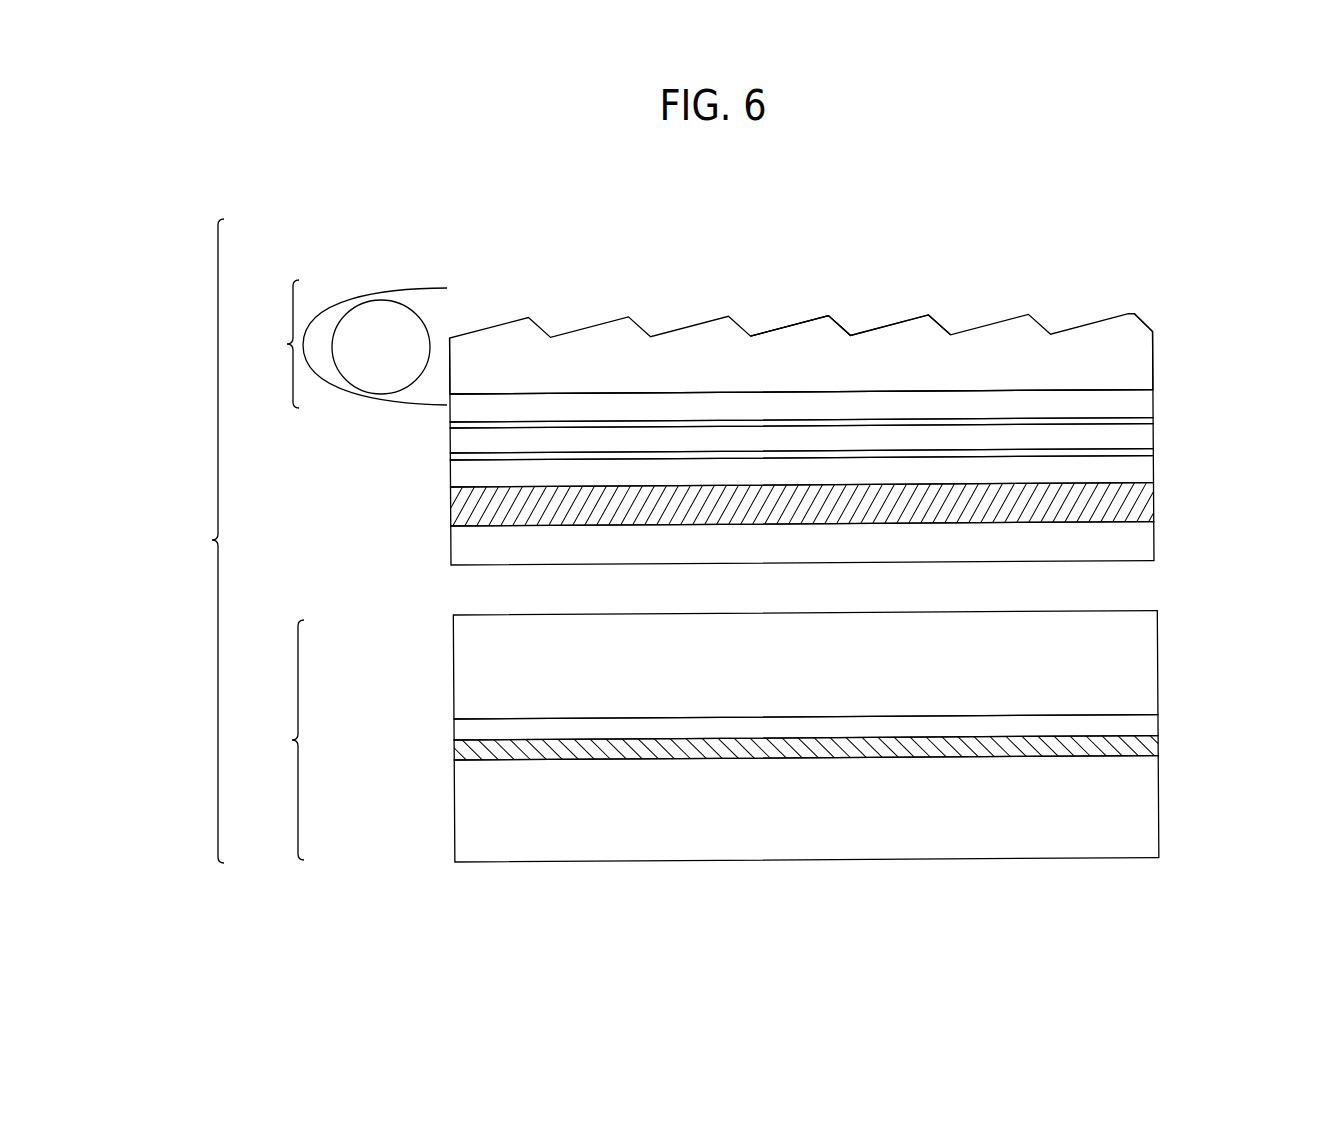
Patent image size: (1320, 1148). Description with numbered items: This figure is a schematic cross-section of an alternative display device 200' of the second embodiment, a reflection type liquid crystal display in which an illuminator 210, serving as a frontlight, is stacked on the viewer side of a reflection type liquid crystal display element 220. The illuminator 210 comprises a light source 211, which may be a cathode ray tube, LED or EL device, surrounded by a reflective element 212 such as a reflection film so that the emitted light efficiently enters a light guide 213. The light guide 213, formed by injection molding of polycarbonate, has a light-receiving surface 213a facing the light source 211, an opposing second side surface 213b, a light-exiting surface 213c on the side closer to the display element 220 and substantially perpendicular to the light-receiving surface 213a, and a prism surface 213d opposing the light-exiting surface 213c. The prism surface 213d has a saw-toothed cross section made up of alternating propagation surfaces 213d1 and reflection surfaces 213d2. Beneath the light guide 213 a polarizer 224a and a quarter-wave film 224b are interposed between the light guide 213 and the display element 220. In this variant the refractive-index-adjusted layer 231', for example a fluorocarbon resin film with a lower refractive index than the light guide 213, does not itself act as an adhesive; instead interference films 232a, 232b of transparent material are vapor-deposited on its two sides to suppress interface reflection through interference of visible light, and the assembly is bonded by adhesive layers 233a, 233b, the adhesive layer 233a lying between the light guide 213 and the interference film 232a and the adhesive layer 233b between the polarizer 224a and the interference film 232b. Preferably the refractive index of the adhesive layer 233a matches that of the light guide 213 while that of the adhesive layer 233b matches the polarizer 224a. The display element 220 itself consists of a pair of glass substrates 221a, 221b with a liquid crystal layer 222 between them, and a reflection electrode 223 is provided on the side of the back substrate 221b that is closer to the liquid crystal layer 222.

The alternative display device 200' is at (183, 541).
The illuminator 210 is at (261, 344).
The light source 211 is at (358, 323).
The reflective element 212 is at (410, 288).
The light guide 213 is at (1011, 350).
The light-receiving surface 213a is at (451, 374).
The second side surface 213b is at (1154, 369).
The light-exiting surface 213c is at (622, 420).
The prism surface 213d is at (930, 236).
The propagation surface 213d1 is at (788, 326).
The reflection surface 213d2 is at (843, 330).
The adhesive layer 233a is at (1148, 402).
The interference film 232a is at (1148, 421).
The refractive-index-adjusted layer 231' is at (857, 434).
The interference film 232b is at (1148, 452).
The adhesive layer 233b is at (1148, 470).
The polarizer 224a is at (470, 507).
The λ/4 film 224b is at (470, 545).
The reflection type liquid crystal display element 220 is at (269, 740).
The substrate 221a is at (472, 668).
The liquid crystal layer 222 is at (470, 732).
The reflection electrode 223 is at (472, 753).
The substrate 221b is at (472, 814).